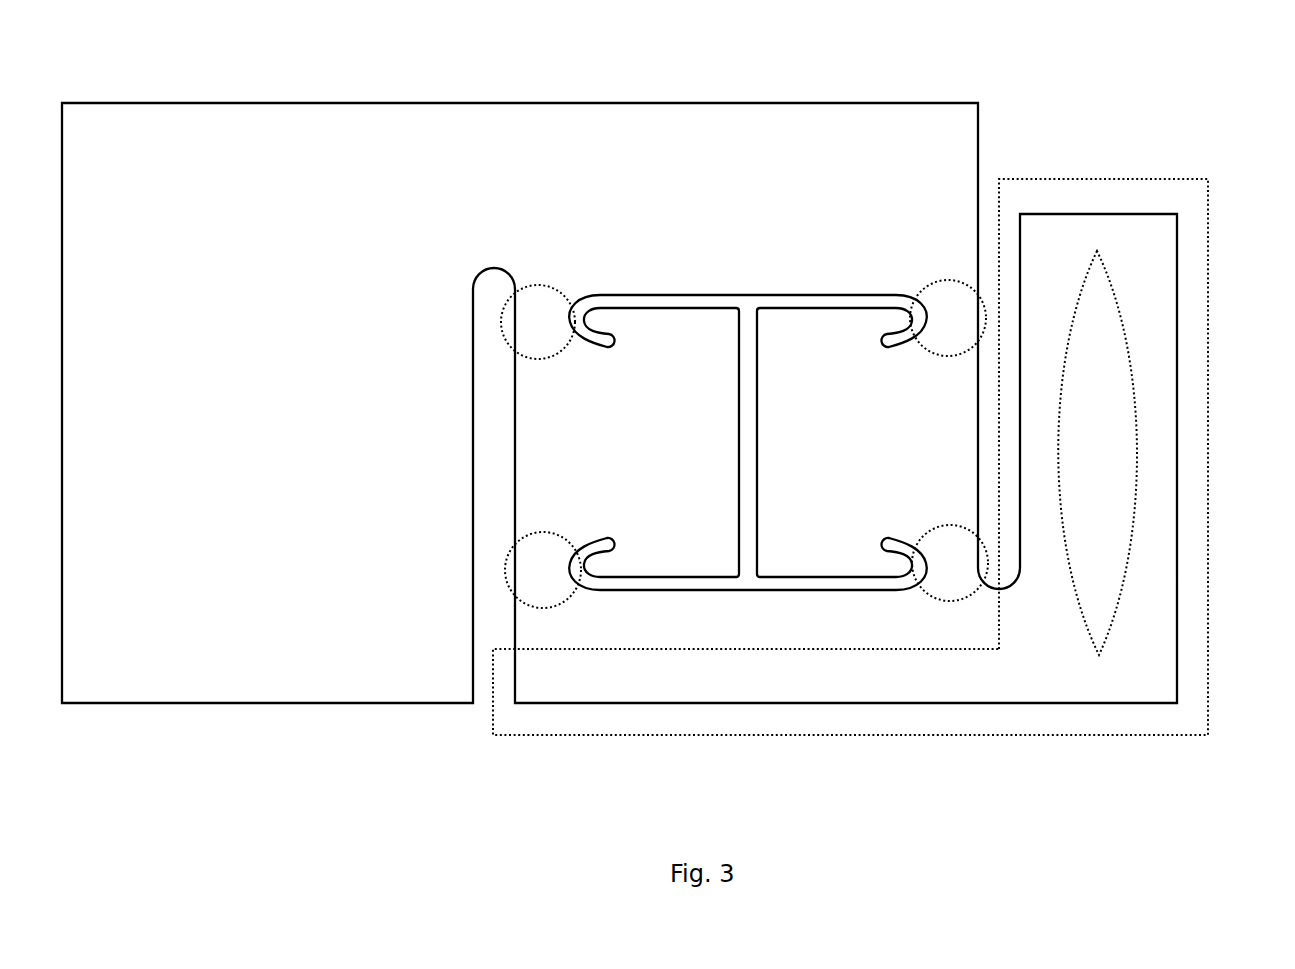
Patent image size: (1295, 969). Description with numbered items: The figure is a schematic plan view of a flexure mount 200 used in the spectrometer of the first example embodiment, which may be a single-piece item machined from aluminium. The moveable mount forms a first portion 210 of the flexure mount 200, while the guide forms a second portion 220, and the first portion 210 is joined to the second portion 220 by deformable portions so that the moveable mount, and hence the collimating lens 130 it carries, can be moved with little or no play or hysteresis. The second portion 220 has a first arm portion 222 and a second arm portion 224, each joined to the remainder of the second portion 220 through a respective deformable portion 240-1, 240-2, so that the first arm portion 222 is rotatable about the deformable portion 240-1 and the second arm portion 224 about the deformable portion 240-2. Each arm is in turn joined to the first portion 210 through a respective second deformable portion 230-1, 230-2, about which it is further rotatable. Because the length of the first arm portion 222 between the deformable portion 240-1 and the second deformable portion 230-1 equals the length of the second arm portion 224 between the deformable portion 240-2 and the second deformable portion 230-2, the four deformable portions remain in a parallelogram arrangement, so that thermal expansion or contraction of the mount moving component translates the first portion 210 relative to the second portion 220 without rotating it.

The flexure mount 200 is at (1054, 94).
The first portion 210 is at (1093, 178).
The collimating lens 130 is at (1092, 410).
The second portion 220 is at (245, 703).
The first arm portion 222 is at (655, 338).
The second arm portion 224 is at (823, 338).
The second deformable portion 230-1 is at (556, 533).
The second deformable portion 230-2 is at (930, 530).
The deformable portion 240-1 is at (540, 285).
The deformable portion 240-2 is at (946, 281).